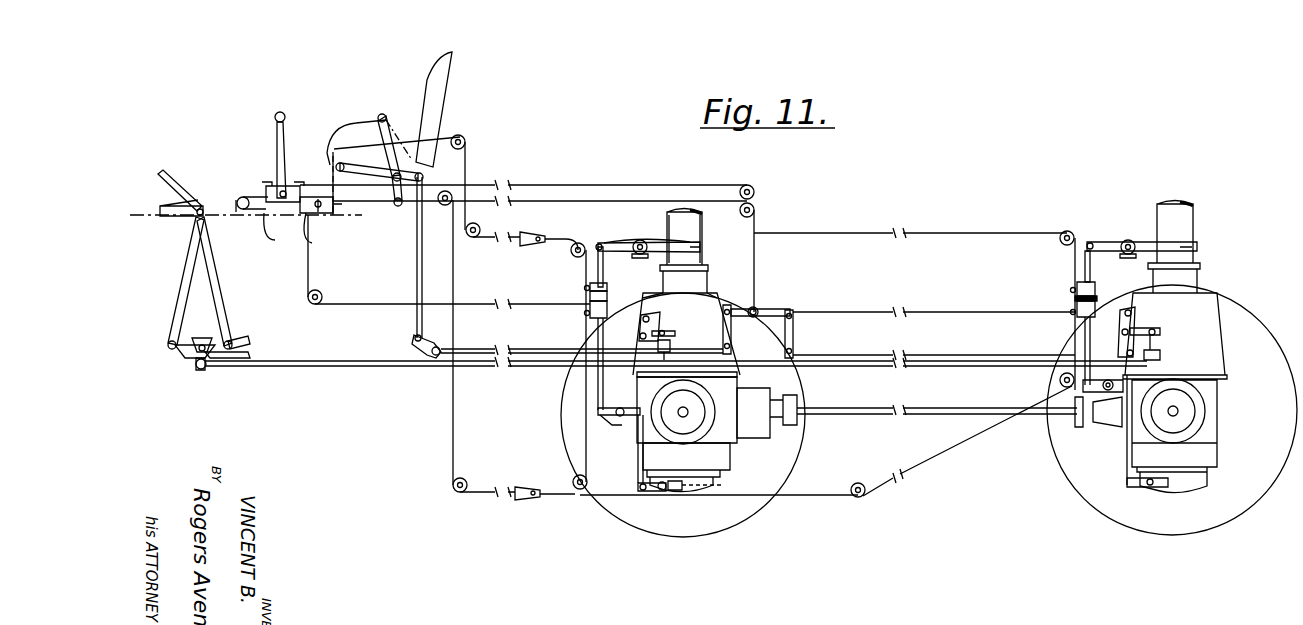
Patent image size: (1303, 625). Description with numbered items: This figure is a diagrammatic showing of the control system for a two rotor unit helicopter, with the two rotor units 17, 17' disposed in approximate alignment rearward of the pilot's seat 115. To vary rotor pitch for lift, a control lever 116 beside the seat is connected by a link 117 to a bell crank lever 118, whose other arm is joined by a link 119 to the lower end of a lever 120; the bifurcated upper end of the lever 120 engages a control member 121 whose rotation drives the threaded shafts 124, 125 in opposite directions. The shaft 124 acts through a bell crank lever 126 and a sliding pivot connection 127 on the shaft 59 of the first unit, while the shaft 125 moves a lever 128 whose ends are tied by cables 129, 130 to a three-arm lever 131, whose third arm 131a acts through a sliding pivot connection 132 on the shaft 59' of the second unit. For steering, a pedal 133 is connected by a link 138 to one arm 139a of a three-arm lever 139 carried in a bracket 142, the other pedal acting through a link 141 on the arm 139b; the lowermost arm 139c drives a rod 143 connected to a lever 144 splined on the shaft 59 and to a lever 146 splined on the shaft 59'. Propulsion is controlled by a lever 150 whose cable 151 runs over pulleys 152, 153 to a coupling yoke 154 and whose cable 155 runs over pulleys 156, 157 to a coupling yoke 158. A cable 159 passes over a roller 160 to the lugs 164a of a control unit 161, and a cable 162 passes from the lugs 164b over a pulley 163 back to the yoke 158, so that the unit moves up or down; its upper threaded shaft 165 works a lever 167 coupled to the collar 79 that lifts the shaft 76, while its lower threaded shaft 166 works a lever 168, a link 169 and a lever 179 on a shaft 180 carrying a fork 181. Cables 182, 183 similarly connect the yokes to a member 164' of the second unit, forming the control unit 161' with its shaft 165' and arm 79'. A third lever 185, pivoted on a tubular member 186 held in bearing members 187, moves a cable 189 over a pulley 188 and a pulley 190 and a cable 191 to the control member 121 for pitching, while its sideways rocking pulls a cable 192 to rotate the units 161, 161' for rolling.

The rotor unit 17 is at (679, 292).
The rotor unit 17' is at (1179, 278).
The shaft 59 is at (680, 348).
The shaft 59' is at (1167, 349).
The shaft 76 is at (703, 222).
The collar 79 is at (668, 250).
The arm 79' is at (1142, 249).
The pilot's seat 115 is at (448, 86).
The control lever 116 is at (372, 128).
The link 117 is at (416, 258).
The bell crank lever 118 is at (414, 340).
The link 119 is at (478, 350).
The lever 120 is at (731, 346).
The control member 121 is at (756, 306).
The shaft 124 is at (690, 318).
The shaft 125 is at (770, 310).
The bell crank lever 126 is at (642, 330).
The sliding pivot connection 127 is at (670, 332).
The lever 128 is at (795, 328).
The cable 129 is at (962, 311).
The cable 130 is at (958, 337).
The three-arm lever 131 is at (1136, 311).
The third arm 131a is at (1158, 328).
The sliding pivot connection 132 is at (1156, 335).
The pedal 133 is at (185, 160).
The link 138 is at (186, 276).
The three-arm lever 139 is at (196, 372).
The arm 139a is at (185, 349).
The arm 139b is at (242, 345).
The lowermost arm 139c is at (235, 356).
The link 141 is at (226, 272).
The bracket 142 is at (207, 336).
The link or rod 143 is at (503, 367).
The lever 144 is at (738, 375).
The lever 146 is at (1200, 367).
The lever 150 is at (385, 116).
The cable 151 is at (470, 172).
The pulley 152 is at (466, 136).
The pulley 153 is at (486, 232).
The coupling yoke 154 is at (520, 244).
The cable 155 is at (455, 274).
The pulley 156 is at (468, 193).
The pulley 157 is at (462, 478).
The coupling yoke 158 is at (522, 500).
The cable 159 is at (556, 238).
The roller 160 is at (574, 256).
The control unit 161 is at (620, 291).
The control unit 161' is at (1049, 333).
The cable 162 is at (596, 412).
The pulley 163 is at (575, 478).
The lugs 164a is at (586, 289).
The lugs 164b is at (586, 312).
The coupling member 164' is at (1056, 287).
The threaded shaft 165 is at (624, 267).
The rod 165' is at (1087, 266).
The threaded shaft 166 is at (604, 380).
The lever 167 is at (615, 244).
The lever 168 is at (606, 426).
The link 169 is at (639, 457).
The lever 179 is at (650, 492).
The shaft 180 is at (665, 490).
The fork 181 is at (722, 484).
The cable 182 is at (940, 232).
The cable 183 is at (950, 450).
The pitching and rolling control lever 185 is at (275, 123).
The tubular member 186 is at (302, 195).
The bearing members 187 is at (300, 240).
The pulley 188 is at (240, 197).
The cable 189 is at (268, 186).
The pulley 190 is at (757, 211).
The cable 191 is at (682, 186).
The cable 192 is at (336, 300).